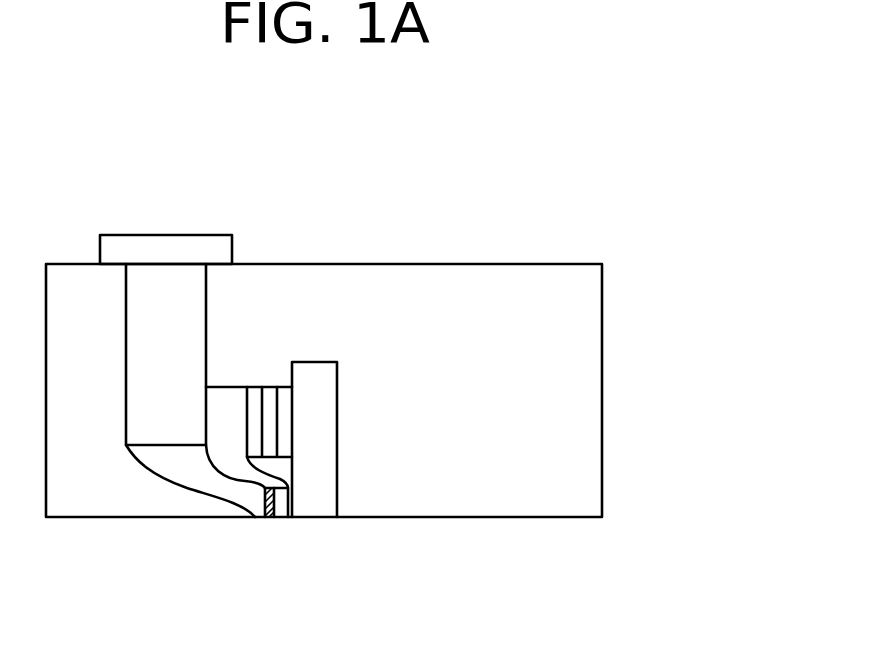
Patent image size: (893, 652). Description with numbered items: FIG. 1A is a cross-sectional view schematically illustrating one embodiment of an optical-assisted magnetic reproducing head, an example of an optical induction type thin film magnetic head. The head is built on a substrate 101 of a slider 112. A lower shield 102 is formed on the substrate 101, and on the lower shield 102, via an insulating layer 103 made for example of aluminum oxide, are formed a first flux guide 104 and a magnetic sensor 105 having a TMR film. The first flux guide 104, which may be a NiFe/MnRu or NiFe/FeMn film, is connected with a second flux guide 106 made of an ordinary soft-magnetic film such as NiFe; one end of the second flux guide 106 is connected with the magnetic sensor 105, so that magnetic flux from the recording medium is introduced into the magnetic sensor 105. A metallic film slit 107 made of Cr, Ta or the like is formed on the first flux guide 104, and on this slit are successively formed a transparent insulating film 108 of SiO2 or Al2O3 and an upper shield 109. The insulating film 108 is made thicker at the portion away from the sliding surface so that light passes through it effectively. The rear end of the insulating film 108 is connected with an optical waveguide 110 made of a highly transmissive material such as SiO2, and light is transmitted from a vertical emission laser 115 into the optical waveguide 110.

The substrate 101 is at (497, 503).
The lower shield 102 is at (320, 497).
The insulating layer 103 is at (293, 510).
The first flux guide 104 is at (280, 502).
The magnetic sensor 105 is at (272, 395).
The second flux guide 106 is at (223, 398).
The metallic film slit 107 is at (264, 505).
The insulating film 108 is at (233, 503).
The upper shield 109 is at (101, 503).
The optical waveguide 110 is at (143, 412).
The slider 112 is at (499, 251).
The vertical emission laser 115 is at (162, 246).